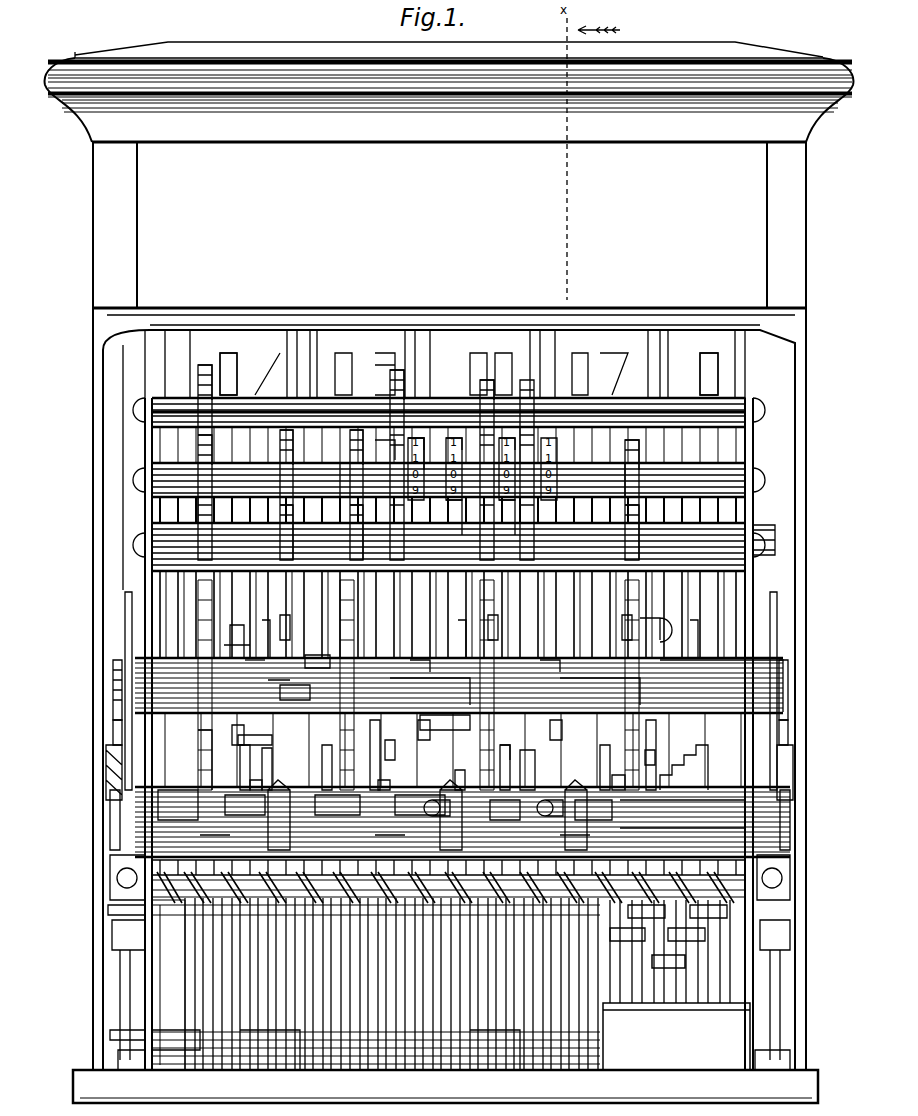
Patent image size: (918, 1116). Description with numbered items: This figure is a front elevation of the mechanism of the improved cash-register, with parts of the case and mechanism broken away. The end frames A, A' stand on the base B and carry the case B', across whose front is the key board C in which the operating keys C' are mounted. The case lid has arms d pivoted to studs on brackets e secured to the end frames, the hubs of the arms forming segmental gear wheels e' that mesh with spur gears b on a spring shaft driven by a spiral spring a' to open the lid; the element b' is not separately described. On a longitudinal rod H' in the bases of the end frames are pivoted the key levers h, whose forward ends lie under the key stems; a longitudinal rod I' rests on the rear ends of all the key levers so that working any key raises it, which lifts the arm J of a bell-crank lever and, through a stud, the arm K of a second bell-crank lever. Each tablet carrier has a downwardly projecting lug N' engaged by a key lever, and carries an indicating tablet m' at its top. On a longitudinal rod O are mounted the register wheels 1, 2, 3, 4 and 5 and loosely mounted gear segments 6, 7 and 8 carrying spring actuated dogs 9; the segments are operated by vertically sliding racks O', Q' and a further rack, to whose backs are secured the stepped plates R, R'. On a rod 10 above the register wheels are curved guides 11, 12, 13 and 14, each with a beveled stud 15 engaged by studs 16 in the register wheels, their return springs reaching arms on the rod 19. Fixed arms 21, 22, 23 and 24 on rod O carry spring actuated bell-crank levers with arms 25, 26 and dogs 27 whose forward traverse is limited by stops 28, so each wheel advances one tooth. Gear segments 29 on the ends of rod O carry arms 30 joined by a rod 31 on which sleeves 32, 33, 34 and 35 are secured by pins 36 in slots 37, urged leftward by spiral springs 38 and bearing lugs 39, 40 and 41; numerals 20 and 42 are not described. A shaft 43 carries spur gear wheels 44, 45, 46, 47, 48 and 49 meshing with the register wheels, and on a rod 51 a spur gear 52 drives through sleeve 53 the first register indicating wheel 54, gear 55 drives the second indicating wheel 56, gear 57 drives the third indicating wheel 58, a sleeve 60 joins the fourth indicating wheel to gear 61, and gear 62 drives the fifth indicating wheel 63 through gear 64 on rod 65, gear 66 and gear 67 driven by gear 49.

The end frame A' is at (130, 734).
The end frame A is at (766, 734).
The base B is at (445, 1086).
The case B' is at (448, 594).
The key board C is at (676, 1012).
The operating key C' is at (672, 930).
The downwardly projecting lug N' is at (376, 984).
The indicating tablet m' is at (469, 365).
The longitudinal rod O is at (721, 686).
The sliding rack O' is at (661, 758).
The stepped plate R is at (684, 767).
The stepped plate R' is at (445, 742).
The sliding rack Q' is at (395, 754).
The bell-crank lever arm K is at (112, 946).
The bell-crank lever arm J is at (130, 1025).
The longitudinal rod I' is at (447, 1055).
The longitudinal rod H' is at (176, 1019).
The key lever h is at (485, 1082).
The spiral spring a' is at (168, 985).
The spur gear b is at (425, 877).
The crank bar b' is at (104, 910).
The lid arm d is at (112, 758).
The bracket e is at (424, 819).
The segmental gear wheel e' is at (423, 690).
The register wheel 1 is at (612, 767).
The register wheel 2 is at (496, 767).
The register wheel 3 is at (337, 767).
The register wheel 4 is at (253, 766).
The register wheel 5 is at (196, 756).
The gear segment 6 is at (650, 742).
The gear segment 7 is at (510, 745).
The gear segment 8 is at (380, 745).
The spring actuated dog 9 is at (273, 769).
The rod 10 is at (724, 560).
The curved guide 11 is at (620, 680).
The curved guide 12 is at (490, 682).
The curved guide 13 is at (535, 756).
The curved guide 14 is at (265, 742).
The beveled stud 15 is at (282, 618).
The stud 16 is at (488, 678).
The rod 19 is at (682, 839).
The stud 20 is at (429, 775).
The fixed arm 21 is at (550, 670).
The fixed arm 22 is at (252, 651).
The fixed arm 23 is at (261, 641).
The fixed arm 24 is at (420, 670).
The bell-crank lever arm 25 is at (318, 665).
The bell-crank lever arm 26 is at (652, 631).
The spring actuated dog 27 is at (353, 694).
The stop 28 is at (393, 732).
The gear segment 29 is at (128, 596).
The arm 30 is at (128, 726).
The rod 31 is at (715, 815).
The sleeve 32 is at (593, 810).
The sleeve 33 is at (495, 810).
The sleeve 34 is at (420, 786).
The sleeve 35 is at (245, 789).
The pin 36 is at (496, 788).
The slot 37 is at (513, 772).
The spiral spring 38 is at (176, 794).
The lug 39 is at (452, 790).
The lug 40 is at (660, 774).
The lug 41 is at (399, 839).
The bracket 42 is at (427, 815).
The shaft 43 is at (768, 525).
The spur gear wheel 44 is at (645, 535).
The spur gear wheel 45 is at (510, 530).
The spur gear wheel 46 is at (460, 530).
The spur gear wheel 47 is at (360, 538).
The spur gear wheel 48 is at (290, 540).
The spur gear wheel 49 is at (190, 518).
The rod 51 is at (708, 478).
The spur gear wheel 52 is at (640, 458).
The sleeve 53 is at (588, 478).
The first register indicating wheel 54 is at (424, 452).
The spur gear wheel 55 is at (505, 430).
The second register indicating wheel 56 is at (488, 430).
The spur gear wheel 57 is at (472, 430).
The third register indicating wheel 58 is at (455, 430).
The sleeve 60 is at (320, 475).
The spur gear wheel 61 is at (280, 455).
The spur gear wheel 62 is at (370, 450).
The fifth register indicating wheel 63 is at (380, 443).
The spur gear wheel 64 is at (397, 372).
The rod 65 is at (672, 410).
The spur gear wheel 66 is at (205, 372).
The spur gear wheel 67 is at (212, 460).